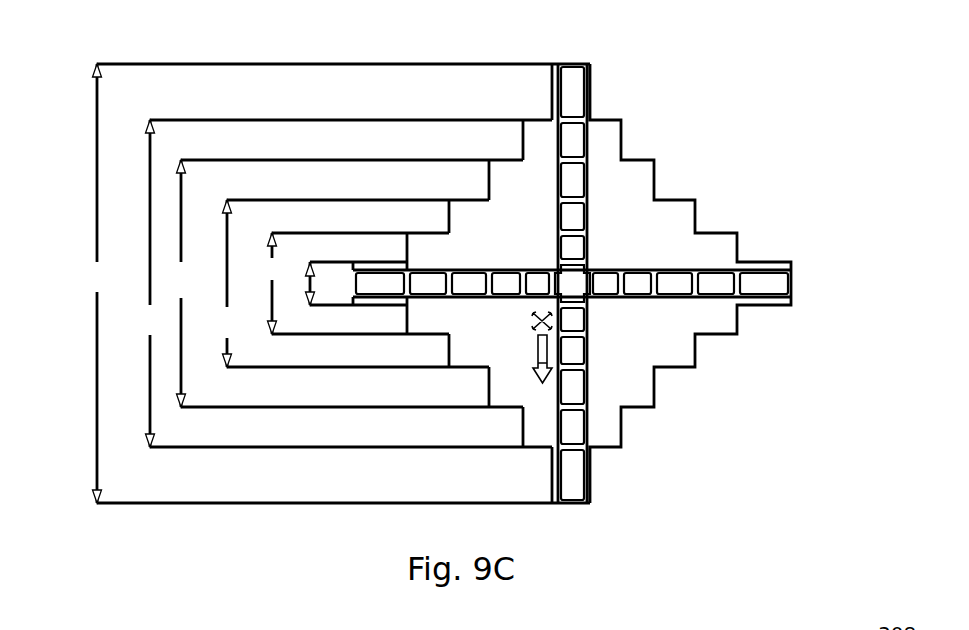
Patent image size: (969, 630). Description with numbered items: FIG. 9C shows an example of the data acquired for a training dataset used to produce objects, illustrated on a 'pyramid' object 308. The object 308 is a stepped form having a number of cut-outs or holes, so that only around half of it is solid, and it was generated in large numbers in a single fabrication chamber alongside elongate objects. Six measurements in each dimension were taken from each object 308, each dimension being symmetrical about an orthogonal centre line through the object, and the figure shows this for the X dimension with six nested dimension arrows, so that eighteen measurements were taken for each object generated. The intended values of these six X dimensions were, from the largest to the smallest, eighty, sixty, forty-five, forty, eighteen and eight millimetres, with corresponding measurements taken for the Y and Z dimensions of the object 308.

The third object 308 is at (754, 103).